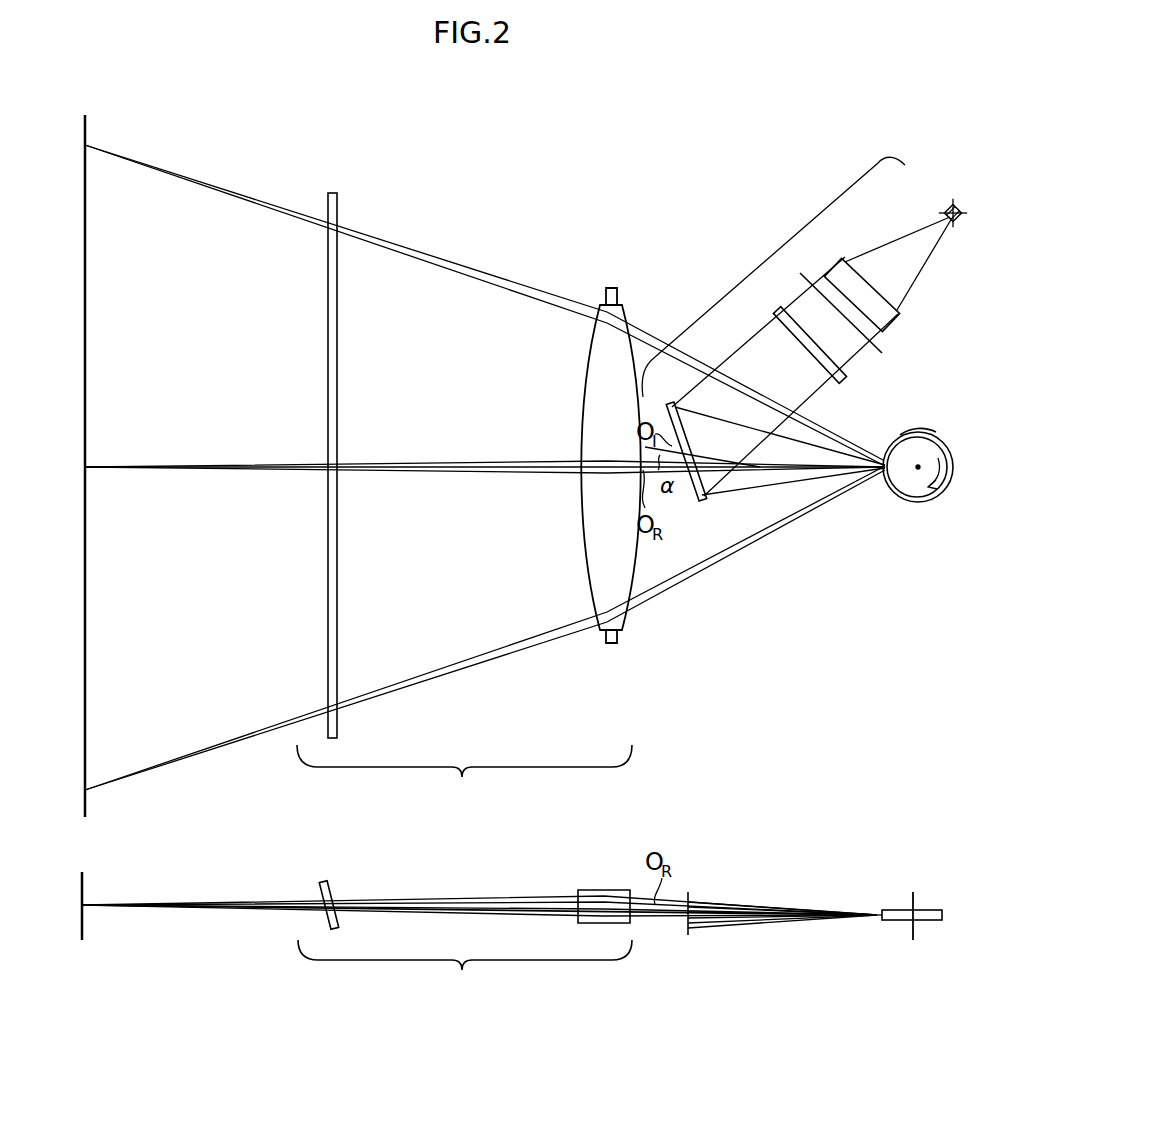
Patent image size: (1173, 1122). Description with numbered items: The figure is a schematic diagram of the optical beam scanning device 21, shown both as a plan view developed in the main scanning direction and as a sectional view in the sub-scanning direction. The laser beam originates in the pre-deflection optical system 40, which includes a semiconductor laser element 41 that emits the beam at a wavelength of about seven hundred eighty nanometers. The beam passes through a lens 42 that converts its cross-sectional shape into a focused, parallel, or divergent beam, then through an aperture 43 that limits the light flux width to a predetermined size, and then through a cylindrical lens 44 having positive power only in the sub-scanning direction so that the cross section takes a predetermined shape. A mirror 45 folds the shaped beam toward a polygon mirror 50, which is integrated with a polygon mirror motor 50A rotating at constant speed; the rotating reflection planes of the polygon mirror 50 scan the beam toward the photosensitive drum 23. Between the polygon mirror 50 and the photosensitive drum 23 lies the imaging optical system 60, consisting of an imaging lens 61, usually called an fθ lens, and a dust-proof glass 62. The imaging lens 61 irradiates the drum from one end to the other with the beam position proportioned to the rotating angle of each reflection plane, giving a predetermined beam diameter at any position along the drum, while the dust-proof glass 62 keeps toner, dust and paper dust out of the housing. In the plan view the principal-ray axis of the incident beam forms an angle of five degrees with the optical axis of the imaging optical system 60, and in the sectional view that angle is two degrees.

The optical beam scanning device 21 is at (483, 222).
The photosensitive drum 23 is at (86, 800).
The pre-deflection optical system 40 is at (770, 262).
The semiconductor laser element 41 is at (957, 224).
The lens 42 is at (897, 327).
The aperture 43 is at (880, 355).
The cylindrical lens 44 is at (840, 375).
The mirror 45 is at (705, 498).
The polygon mirror 50 is at (920, 503).
The polygon mirror motor 50A is at (937, 437).
The imaging optical system 60 is at (464, 872).
The imaging lens 61 is at (612, 645).
The dust-proof glass 62 is at (337, 724).